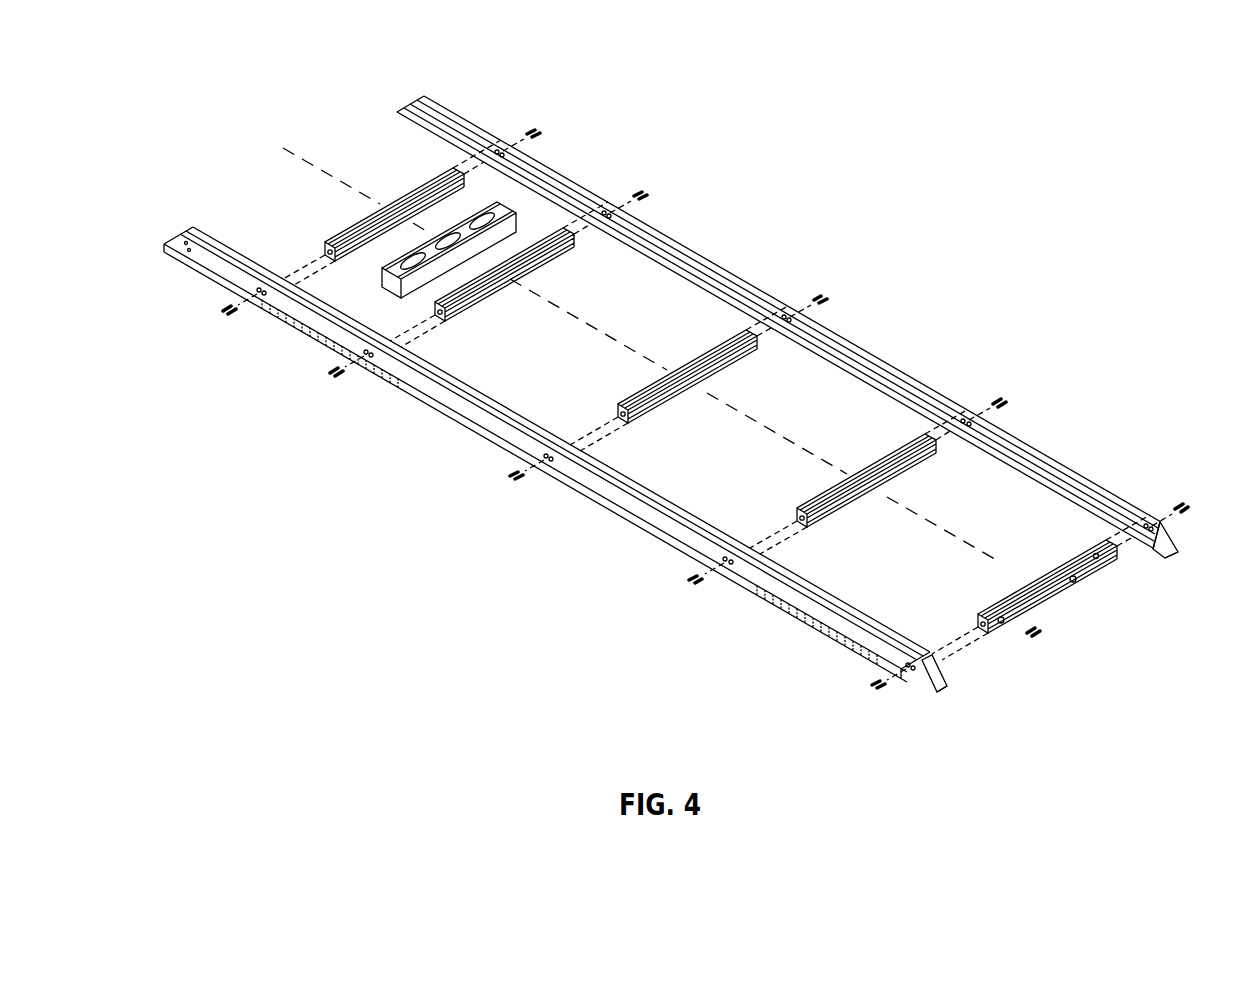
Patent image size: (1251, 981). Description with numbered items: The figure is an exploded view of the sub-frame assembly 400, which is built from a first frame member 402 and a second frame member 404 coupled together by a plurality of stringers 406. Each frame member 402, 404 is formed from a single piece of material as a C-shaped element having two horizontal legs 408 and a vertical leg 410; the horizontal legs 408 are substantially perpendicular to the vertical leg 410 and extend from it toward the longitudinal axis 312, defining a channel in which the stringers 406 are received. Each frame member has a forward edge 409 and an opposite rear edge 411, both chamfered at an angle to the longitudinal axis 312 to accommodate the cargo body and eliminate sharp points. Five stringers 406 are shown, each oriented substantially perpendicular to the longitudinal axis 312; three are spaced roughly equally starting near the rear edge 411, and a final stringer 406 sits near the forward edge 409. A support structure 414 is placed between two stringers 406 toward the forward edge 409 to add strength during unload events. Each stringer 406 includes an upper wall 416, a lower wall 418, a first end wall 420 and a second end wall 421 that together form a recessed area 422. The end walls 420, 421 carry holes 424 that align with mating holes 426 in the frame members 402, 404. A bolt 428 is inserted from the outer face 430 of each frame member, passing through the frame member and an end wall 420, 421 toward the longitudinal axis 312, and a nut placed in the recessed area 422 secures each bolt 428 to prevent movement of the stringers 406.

The sub-frame assembly 400 is at (252, 115).
The first frame member 402 is at (443, 403).
The second frame member 404 is at (697, 247).
The stringers 406 is at (1030, 601).
The horizontal legs 408 is at (472, 125).
The forward edge 409 is at (401, 108).
The vertical leg 410 is at (625, 505).
The rear edge 411 is at (1172, 540).
The longitudinal axis 312 is at (958, 538).
The support structure 414 is at (381, 276).
The upper wall 416 is at (1012, 598).
The lower wall 418 is at (1068, 595).
The first end wall 420 is at (976, 636).
The second end wall 421 is at (1105, 567).
The recessed area 422 is at (1040, 622).
The holes 424 is at (1090, 553).
The holes 426 is at (1157, 523).
The bolt 428 is at (872, 690).
The outer face 430 is at (748, 574).